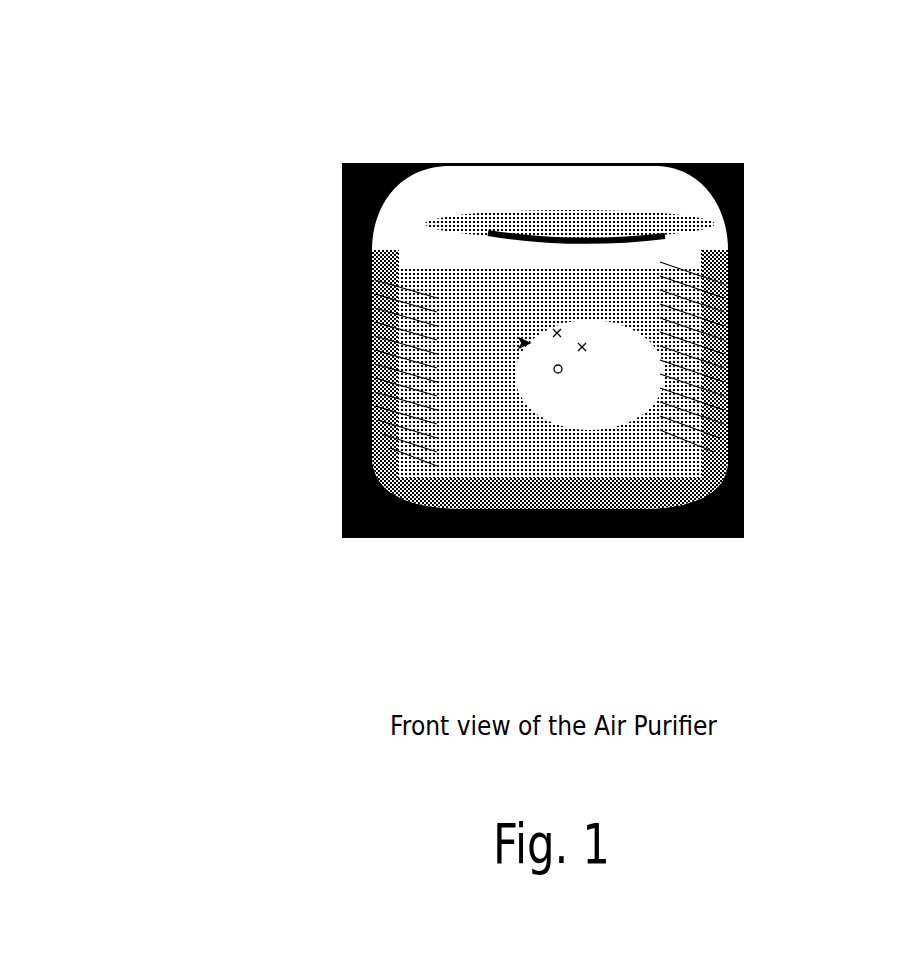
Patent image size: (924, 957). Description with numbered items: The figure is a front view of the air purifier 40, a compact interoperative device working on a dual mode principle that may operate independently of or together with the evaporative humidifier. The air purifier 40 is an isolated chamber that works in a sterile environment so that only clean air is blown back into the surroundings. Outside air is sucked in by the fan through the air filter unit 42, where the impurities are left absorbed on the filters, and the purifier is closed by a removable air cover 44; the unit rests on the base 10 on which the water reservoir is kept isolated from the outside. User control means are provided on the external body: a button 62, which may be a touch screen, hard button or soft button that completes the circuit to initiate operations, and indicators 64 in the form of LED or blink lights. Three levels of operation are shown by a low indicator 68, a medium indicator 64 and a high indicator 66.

The base 10 is at (744, 537).
The air purifier 40 is at (744, 136).
The air filter unit 42 is at (522, 343).
The air cover 44 is at (357, 166).
The button 62 is at (563, 369).
The indicator 64 is at (560, 333).
The high indicator 66 is at (585, 347).
The low indicator 68 is at (385, 425).